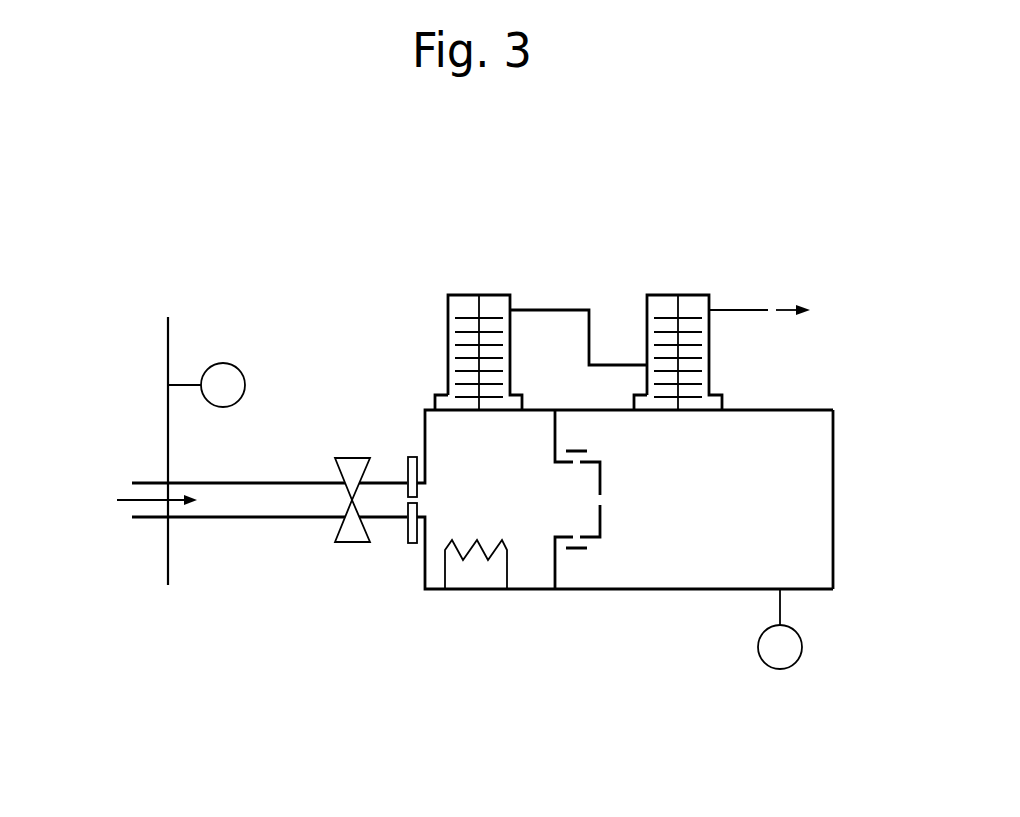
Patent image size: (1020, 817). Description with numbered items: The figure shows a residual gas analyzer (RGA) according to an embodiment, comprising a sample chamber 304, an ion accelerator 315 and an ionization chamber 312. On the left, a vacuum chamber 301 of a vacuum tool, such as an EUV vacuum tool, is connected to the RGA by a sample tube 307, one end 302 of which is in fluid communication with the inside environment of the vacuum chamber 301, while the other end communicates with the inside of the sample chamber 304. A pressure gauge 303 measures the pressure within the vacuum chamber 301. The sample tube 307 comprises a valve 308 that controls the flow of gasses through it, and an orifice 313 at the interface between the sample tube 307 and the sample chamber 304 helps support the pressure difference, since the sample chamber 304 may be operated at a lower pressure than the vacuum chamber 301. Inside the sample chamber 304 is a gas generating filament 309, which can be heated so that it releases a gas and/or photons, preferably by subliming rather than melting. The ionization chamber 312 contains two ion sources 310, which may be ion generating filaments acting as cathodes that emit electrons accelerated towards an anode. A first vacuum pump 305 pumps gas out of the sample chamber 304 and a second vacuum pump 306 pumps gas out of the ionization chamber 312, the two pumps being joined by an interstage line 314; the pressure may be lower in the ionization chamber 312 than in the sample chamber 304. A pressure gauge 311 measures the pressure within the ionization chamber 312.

The vacuum chamber 301 is at (97, 331).
The end of sample tube 302 is at (135, 492).
The pressure gauge 303 is at (221, 363).
The sample chamber 304 is at (439, 431).
The first vacuum pump 305 is at (471, 295).
The second vacuum pump 306 is at (680, 295).
The sample tube 307 is at (244, 518).
The valve 308 is at (340, 540).
The gas generating filament 309 is at (507, 578).
The ion source 310 is at (585, 455).
The pressure gauge 311 is at (783, 669).
The ionization chamber 312 is at (800, 532).
The orifice 313 is at (412, 545).
The interstage line 314 is at (569, 305).
The ion accelerator 315 is at (602, 519).